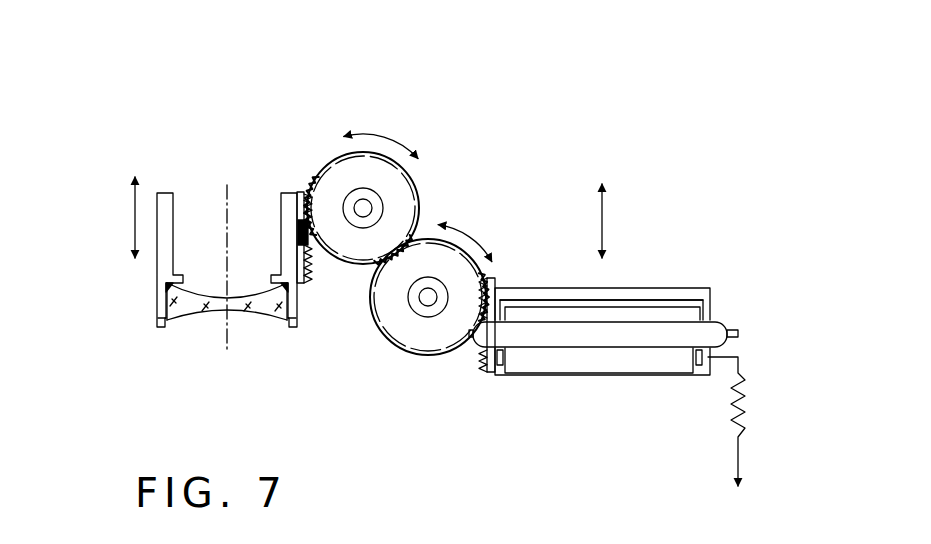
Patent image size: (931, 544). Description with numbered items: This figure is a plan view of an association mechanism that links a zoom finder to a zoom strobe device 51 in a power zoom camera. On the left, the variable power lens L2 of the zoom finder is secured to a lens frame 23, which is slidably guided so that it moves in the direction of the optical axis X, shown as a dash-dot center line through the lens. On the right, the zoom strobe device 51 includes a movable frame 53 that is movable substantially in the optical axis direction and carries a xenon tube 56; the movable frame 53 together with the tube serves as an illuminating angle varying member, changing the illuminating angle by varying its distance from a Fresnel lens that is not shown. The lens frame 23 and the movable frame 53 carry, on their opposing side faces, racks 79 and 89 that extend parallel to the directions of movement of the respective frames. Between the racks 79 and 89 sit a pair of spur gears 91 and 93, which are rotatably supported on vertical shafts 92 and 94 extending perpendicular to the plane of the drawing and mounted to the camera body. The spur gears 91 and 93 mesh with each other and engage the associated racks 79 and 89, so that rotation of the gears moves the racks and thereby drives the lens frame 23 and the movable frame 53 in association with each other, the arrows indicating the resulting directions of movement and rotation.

The lens frame 23 is at (164, 193).
The optical axis X is at (238, 187).
The variable power lens L2 is at (175, 324).
The rack 79 is at (302, 283).
The spur gear 91 is at (417, 197).
The vertical shaft 92 is at (361, 217).
The spur gear 93 is at (425, 247).
The vertical shaft 94 is at (430, 306).
The rack 89 is at (497, 280).
The movable frame 53 is at (643, 292).
The xenon tube 56 is at (721, 323).
The zoom strobe device 51 is at (585, 399).